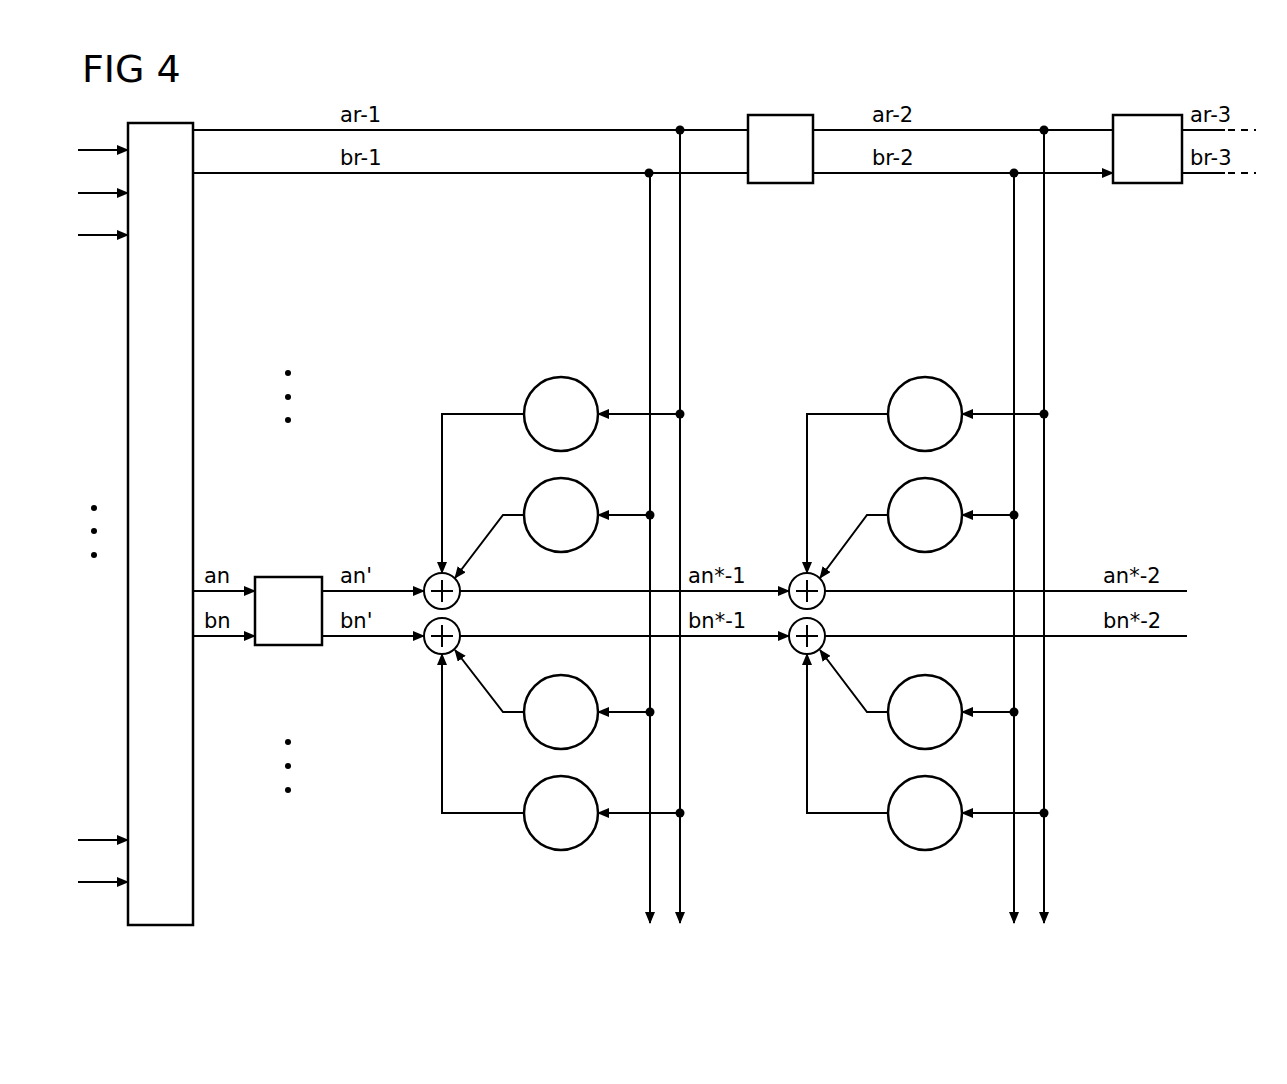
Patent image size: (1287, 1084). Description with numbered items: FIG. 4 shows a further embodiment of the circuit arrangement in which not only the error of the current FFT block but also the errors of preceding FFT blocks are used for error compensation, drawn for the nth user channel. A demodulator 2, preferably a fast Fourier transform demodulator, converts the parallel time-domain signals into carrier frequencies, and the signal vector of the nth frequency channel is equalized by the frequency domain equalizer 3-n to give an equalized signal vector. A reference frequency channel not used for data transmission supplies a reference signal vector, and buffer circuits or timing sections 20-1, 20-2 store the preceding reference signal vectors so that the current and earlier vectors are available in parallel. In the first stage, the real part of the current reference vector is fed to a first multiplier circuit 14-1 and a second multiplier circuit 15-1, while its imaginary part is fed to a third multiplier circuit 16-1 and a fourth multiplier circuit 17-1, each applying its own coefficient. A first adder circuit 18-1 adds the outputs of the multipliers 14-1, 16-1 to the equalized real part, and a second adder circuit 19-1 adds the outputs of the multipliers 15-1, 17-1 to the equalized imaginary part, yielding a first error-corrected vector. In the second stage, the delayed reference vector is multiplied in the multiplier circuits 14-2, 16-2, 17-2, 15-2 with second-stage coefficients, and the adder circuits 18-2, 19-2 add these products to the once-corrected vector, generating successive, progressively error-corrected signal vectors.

The demodulator 2 is at (193, 415).
The frequency domain equalizer 3-n is at (290, 577).
The first multiplier circuit 14-1 is at (534, 385).
The third multiplier circuit 16-1 is at (534, 486).
The fourth multiplier circuit 17-1 is at (534, 683).
The second multiplier circuit 15-1 is at (534, 784).
The first adder circuit 18-1 is at (430, 579).
The second adder circuit 19-1 is at (430, 649).
The first multiplier circuit 14-2 is at (898, 385).
The third multiplier circuit 16-2 is at (898, 486).
The fourth multiplier circuit 17-2 is at (898, 683).
The second multiplier circuit 15-2 is at (898, 784).
The first adder circuit 18-2 is at (795, 579).
The second adder circuit 19-2 is at (795, 649).
The buffer circuit 20-1 is at (783, 183).
The buffer circuit 20-2 is at (1148, 183).